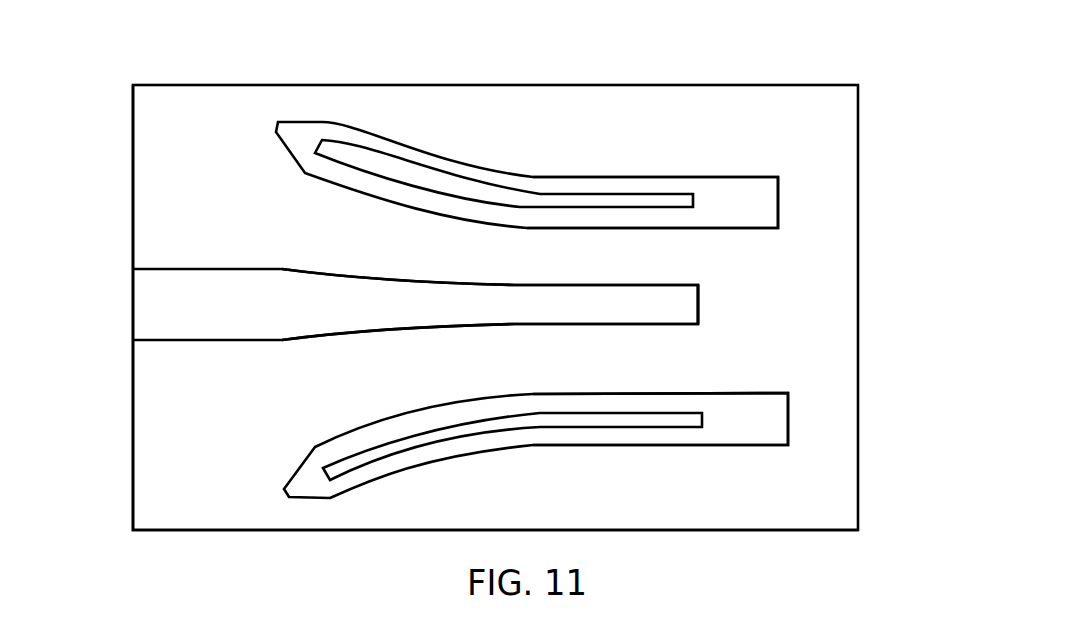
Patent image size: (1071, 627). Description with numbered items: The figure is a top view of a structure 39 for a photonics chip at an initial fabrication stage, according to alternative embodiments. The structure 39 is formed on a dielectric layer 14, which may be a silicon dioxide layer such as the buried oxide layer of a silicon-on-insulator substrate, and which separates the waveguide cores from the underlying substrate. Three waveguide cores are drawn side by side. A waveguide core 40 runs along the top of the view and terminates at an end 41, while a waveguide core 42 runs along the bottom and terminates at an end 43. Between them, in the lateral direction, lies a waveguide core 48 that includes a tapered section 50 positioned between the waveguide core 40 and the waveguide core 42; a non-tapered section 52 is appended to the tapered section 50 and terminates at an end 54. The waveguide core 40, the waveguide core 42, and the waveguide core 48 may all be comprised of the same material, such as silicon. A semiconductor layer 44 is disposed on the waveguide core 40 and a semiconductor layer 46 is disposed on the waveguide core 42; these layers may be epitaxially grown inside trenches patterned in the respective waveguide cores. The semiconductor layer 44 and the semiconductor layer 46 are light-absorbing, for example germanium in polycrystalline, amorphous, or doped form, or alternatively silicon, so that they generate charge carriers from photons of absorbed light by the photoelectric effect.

The structure 39 is at (126, 46).
The dielectric layer 14 is at (192, 448).
The waveguide core 40 is at (653, 190).
The semiconductor layer 44 is at (550, 202).
The end 41 is at (778, 204).
The waveguide core 48 is at (722, 276).
The tapered section 50 is at (597, 303).
The non-tapered section 52 is at (367, 293).
The end 54 is at (698, 313).
The waveguide core 42 is at (673, 433).
The semiconductor layer 46 is at (573, 420).
The end 43 is at (788, 424).